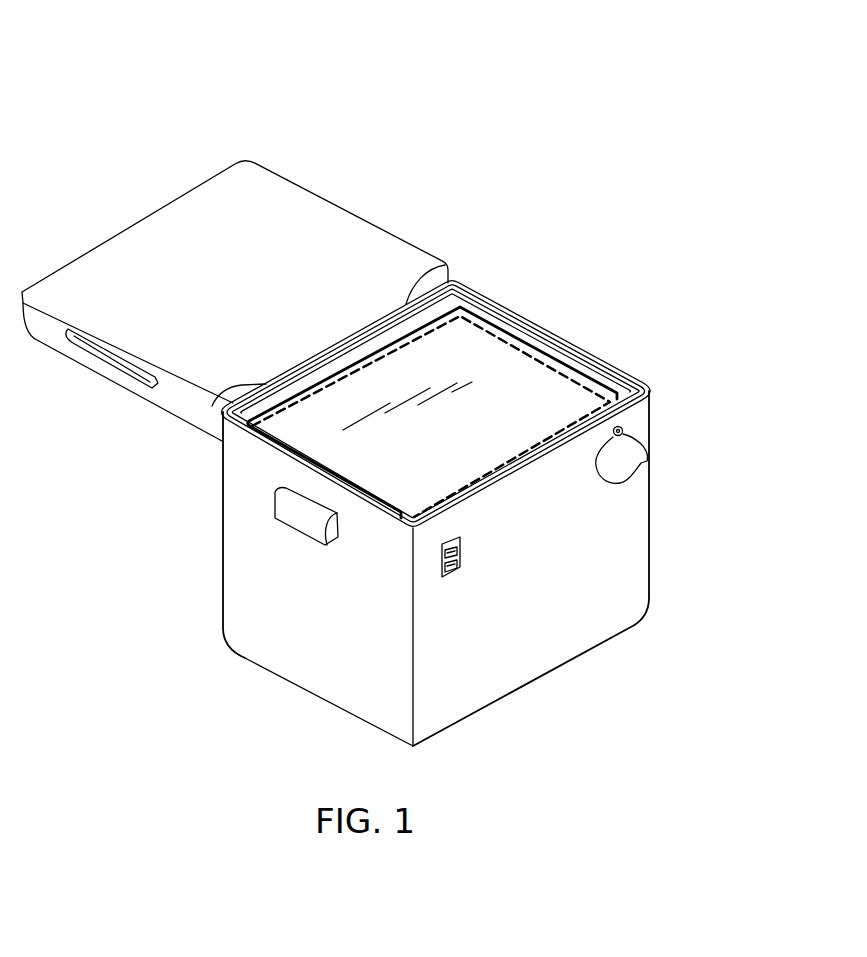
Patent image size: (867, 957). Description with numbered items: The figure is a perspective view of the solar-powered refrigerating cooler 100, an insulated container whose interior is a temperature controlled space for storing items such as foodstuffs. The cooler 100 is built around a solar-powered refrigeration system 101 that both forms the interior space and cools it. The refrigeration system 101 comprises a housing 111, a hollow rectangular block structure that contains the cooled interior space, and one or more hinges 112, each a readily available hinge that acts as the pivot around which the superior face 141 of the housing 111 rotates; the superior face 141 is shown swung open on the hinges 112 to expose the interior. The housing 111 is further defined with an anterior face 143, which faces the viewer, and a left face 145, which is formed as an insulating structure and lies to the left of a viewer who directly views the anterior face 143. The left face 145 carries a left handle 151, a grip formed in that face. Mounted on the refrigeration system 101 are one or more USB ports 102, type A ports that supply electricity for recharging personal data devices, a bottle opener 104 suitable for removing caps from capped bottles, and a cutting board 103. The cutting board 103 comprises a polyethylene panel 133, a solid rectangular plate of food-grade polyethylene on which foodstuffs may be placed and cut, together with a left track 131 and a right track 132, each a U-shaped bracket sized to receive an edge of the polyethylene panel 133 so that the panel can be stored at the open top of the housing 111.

The solar-powered refrigerating cooler 100 is at (112, 101).
The refrigeration system 101 is at (443, 516).
The USB ports 102 is at (453, 575).
The cutting board 103 is at (563, 405).
The bottle opener 104 is at (622, 450).
The housing 111 is at (247, 592).
The hinges 112 is at (232, 386).
The left track 131 is at (268, 440).
The right track 132 is at (560, 365).
The polyethylene panel 133 is at (467, 385).
The superior face 141 is at (320, 253).
The anterior face 143 is at (587, 613).
The left face 145 is at (360, 687).
The left handle 151 is at (333, 527).